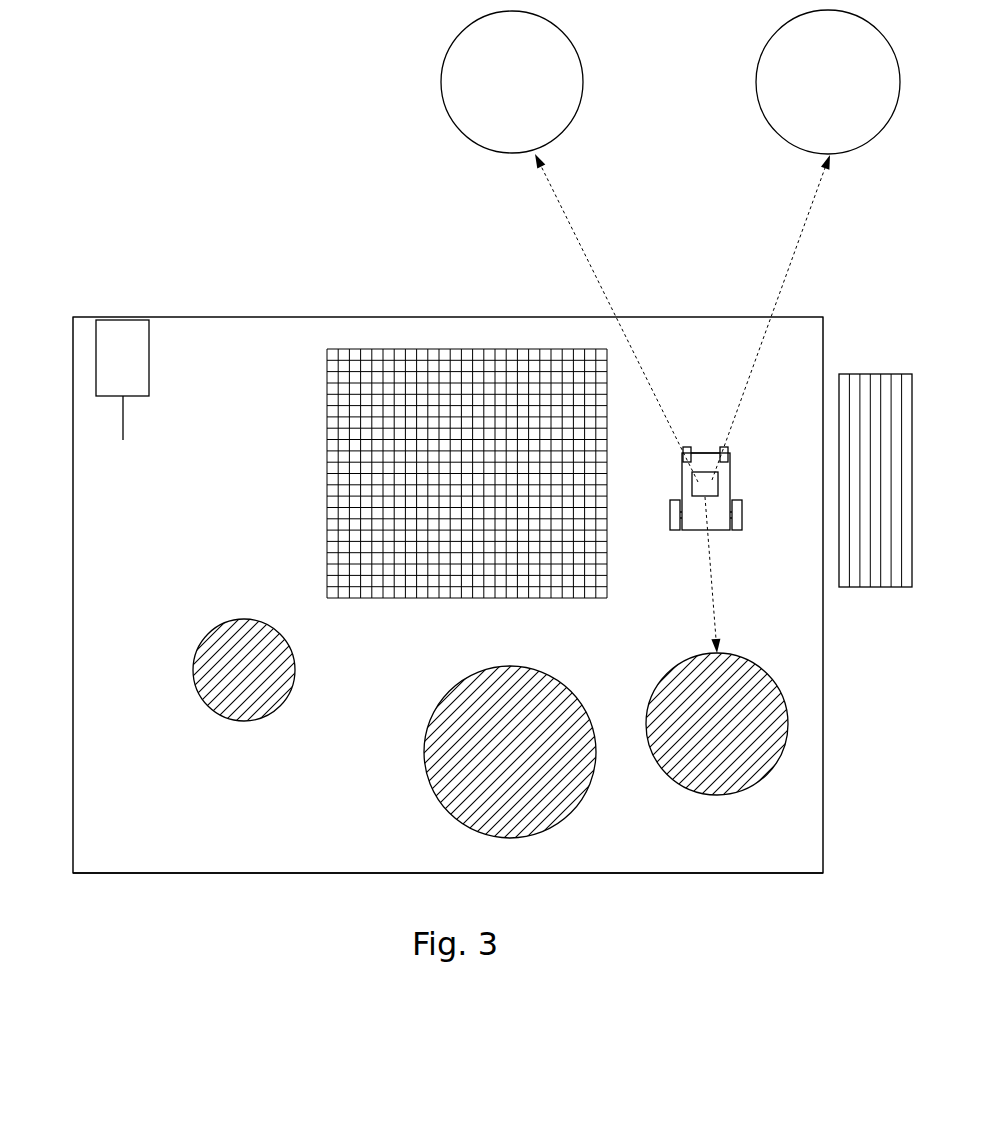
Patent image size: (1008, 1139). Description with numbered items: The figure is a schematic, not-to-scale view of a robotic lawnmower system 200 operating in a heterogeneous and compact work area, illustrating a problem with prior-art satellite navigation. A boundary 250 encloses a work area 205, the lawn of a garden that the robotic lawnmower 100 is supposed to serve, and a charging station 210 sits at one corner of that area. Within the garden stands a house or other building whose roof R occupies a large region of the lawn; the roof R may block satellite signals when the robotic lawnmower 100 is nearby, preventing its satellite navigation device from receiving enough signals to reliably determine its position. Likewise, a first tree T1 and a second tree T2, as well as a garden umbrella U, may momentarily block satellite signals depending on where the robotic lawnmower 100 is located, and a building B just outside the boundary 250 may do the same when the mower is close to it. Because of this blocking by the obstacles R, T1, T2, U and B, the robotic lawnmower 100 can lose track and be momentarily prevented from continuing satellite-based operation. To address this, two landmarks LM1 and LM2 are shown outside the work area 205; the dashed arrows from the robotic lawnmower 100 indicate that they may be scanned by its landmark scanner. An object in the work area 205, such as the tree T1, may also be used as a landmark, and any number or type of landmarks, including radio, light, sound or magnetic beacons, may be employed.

The robotic lawnmower 100 is at (730, 497).
The robotic lawnmower system 200 is at (130, 519).
The work area 205 is at (316, 862).
The charging station 210 is at (100, 344).
The boundary 250 is at (765, 873).
The landmark LM1 is at (535, 93).
The landmark LM2 is at (851, 93).
The roof R is at (478, 486).
The building B is at (883, 490).
The garden umbrella U is at (252, 678).
The first tree T1 is at (729, 733).
The second tree T2 is at (523, 761).